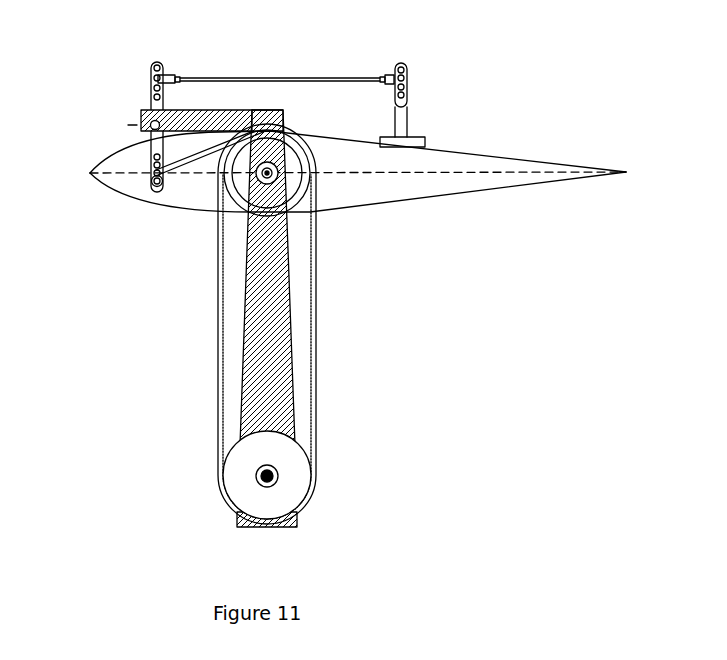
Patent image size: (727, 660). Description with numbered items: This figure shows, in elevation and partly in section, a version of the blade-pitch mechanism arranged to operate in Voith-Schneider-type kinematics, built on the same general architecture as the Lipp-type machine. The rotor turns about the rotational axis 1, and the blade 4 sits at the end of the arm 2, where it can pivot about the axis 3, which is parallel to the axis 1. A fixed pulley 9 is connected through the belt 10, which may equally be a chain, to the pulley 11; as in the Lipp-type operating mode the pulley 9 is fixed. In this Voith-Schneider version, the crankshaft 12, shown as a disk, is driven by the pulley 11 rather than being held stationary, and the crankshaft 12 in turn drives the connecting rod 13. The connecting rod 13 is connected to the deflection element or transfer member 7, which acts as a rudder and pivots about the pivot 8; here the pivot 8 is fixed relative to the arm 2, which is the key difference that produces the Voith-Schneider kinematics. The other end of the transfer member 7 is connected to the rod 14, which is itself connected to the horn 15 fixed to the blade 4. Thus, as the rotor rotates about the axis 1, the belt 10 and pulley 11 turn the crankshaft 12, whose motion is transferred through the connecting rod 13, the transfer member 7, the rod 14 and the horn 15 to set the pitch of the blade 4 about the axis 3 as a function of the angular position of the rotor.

The axis 1 is at (279, 483).
The arm 2 is at (246, 398).
The axis 3 is at (273, 179).
The blade 4 is at (427, 186).
The deflection element 7 is at (147, 93).
The pivot 8 is at (146, 127).
The fixed pulley 9 is at (290, 472).
The belt 10 is at (318, 421).
The pulley 11 is at (238, 217).
The crankshaft 12 is at (238, 199).
The connecting rod 13 is at (188, 164).
The rod 14 is at (224, 75).
The horn 15 is at (407, 106).